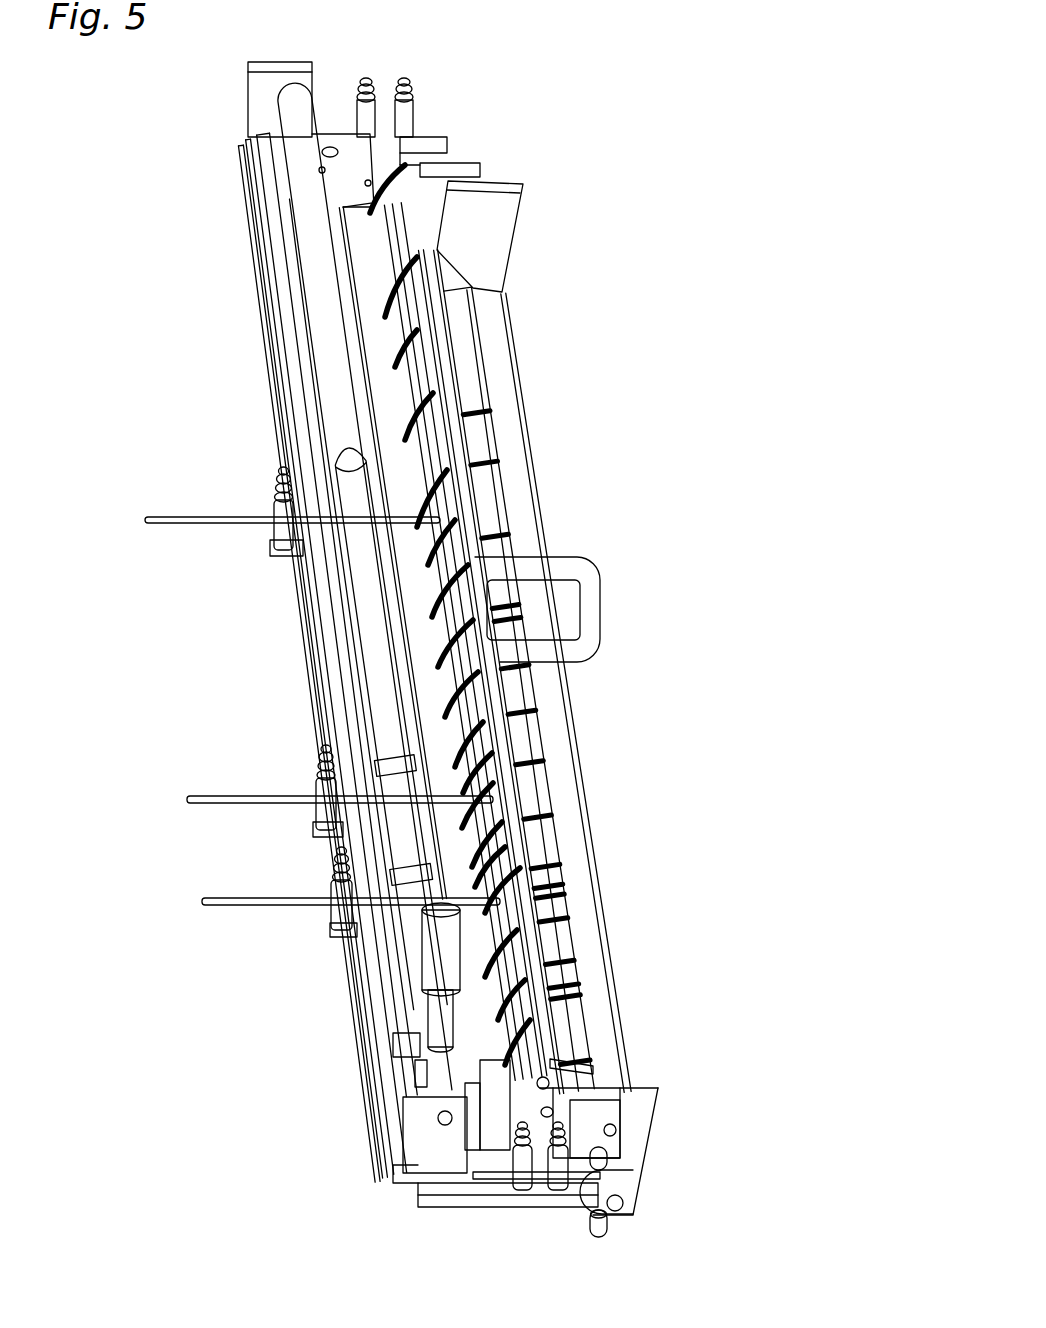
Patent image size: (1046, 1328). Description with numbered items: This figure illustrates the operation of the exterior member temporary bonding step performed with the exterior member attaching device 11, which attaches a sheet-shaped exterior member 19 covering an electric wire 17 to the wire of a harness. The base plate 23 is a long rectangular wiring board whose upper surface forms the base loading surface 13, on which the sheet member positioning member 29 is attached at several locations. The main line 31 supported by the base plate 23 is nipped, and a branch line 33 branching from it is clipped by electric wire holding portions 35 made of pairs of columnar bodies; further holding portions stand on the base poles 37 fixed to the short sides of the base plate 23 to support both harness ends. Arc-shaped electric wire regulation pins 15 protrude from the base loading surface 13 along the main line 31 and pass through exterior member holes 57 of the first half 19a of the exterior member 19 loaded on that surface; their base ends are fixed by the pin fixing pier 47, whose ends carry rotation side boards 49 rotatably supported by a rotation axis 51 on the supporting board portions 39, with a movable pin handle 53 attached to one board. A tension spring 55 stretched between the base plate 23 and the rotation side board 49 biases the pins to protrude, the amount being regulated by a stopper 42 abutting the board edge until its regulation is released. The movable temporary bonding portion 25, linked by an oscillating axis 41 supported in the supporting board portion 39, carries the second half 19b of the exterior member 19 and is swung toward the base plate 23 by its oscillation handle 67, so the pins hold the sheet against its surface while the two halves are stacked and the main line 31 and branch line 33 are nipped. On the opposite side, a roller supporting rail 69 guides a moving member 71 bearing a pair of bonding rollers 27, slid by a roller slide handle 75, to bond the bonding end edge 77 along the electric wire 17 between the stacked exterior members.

The exterior member attaching device 11 is at (190, 143).
The base loading surface 13 is at (350, 190).
The electric wire regulation pin 15 is at (365, 400).
The electric wire 17 is at (420, 372).
The exterior member 19 is at (423, 247).
The first half of the exterior member 19a is at (440, 693).
The second half of the exterior member 19b is at (380, 270).
The base plate 23 is at (313, 690).
The movable temporary bonding portion 25 is at (457, 333).
The bonding roller 27 is at (487, 1100).
The sheet member positioning member 29 is at (455, 455).
The main line 31 is at (473, 553).
The branch line 33 is at (178, 517).
The electric wire holding portion 35 is at (355, 105).
The base pole 37 is at (433, 147).
The supporting board portion 39 is at (610, 1113).
The oscillating axis 41 is at (550, 1062).
The stopper 42 is at (600, 1167).
The pin fixing pier 47 is at (555, 690).
The rotation side board 49 is at (523, 213).
The rotation axis 51 is at (617, 1133).
The movable pin handle 53 is at (607, 1227).
The tension spring 55 is at (558, 1213).
The exterior member hole 57 is at (363, 615).
The oscillation handle 67 is at (592, 607).
The roller supporting rail 69 is at (320, 287).
The moving member 71 is at (443, 1048).
The roller slide handle 75 is at (430, 955).
The bonding end edge 77 is at (297, 430).